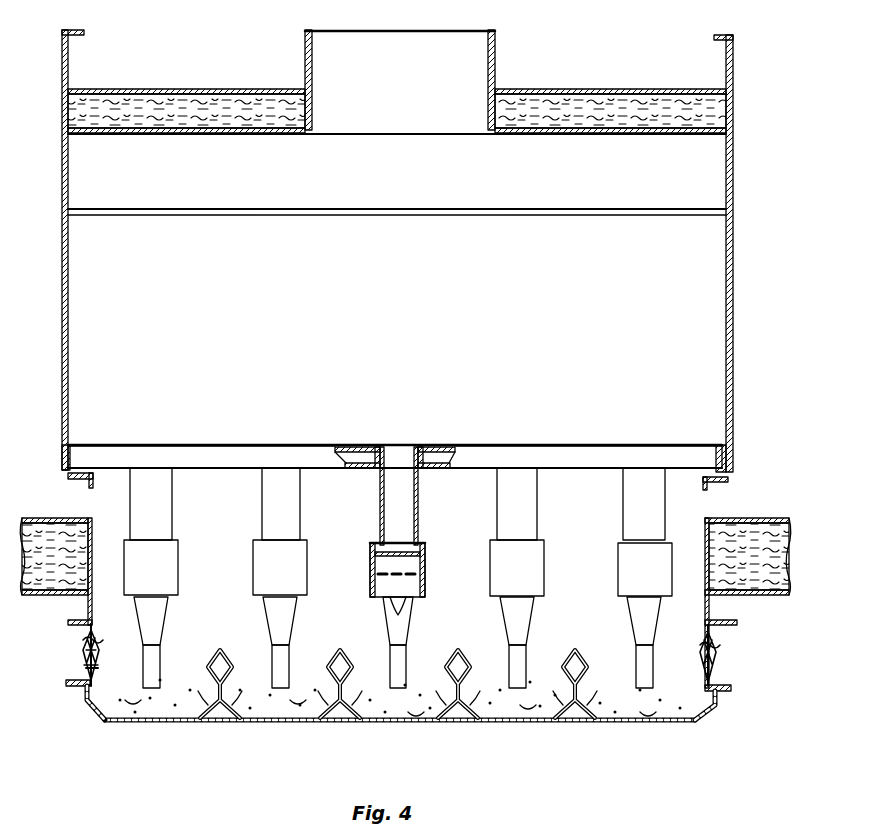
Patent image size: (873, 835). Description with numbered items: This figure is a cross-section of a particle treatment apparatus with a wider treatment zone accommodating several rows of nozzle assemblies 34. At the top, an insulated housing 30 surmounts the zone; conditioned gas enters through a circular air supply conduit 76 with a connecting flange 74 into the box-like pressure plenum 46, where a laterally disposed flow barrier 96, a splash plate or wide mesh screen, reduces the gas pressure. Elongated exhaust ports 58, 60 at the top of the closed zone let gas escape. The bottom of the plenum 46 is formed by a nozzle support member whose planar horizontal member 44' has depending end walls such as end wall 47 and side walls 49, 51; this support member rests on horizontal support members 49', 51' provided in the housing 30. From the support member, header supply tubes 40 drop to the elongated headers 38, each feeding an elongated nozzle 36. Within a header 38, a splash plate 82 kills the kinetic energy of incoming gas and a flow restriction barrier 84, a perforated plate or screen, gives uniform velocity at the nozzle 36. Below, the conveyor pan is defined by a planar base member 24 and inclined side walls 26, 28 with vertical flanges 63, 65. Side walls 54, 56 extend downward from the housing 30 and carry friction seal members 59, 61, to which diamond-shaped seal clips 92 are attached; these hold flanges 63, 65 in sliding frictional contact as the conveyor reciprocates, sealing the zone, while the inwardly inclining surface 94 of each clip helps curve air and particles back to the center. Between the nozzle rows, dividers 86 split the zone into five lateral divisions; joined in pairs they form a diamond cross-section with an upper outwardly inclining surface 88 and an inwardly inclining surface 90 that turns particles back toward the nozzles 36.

The planar base member 24 is at (132, 724).
The inclined side wall 26 is at (86, 698).
The inclined side wall 28 is at (707, 711).
The insulated housing 30 is at (196, 118).
The nozzle assembly 34 is at (355, 438).
The elongated nozzle 36 is at (160, 627).
The elongated header 38 is at (253, 564).
The header supply tube 40 is at (409, 510).
The planar horizontal member 44' is at (395, 429).
The pressure plenum 46 is at (418, 294).
The end wall 47 is at (207, 456).
The side wall 49 is at (40, 447).
The horizontal support member 49' is at (50, 481).
The side wall 51 is at (703, 446).
The horizontal support member 51' is at (742, 474).
The side wall 54 is at (86, 613).
The side wall 56 is at (717, 620).
The exhaust port 58 is at (84, 509).
The friction seal member 59 is at (96, 628).
The exhaust port 60 is at (690, 521).
The friction seal member 61 is at (704, 632).
The vertically disposed flange 63 is at (82, 660).
The vertically disposed flange 65 is at (698, 672).
The flange 74 is at (303, 32).
The air supply conduit 76 is at (496, 50).
The splash plate 82 is at (427, 545).
The flow restriction barrier 84 is at (421, 566).
The divider 86 is at (206, 684).
The outwardly inclining surface 88 is at (340, 651).
The inwardly inclining surface 90 is at (328, 672).
The seal clip 92 is at (83, 640).
The inwardly inclining surface 94 is at (100, 666).
The flow barrier 96 is at (431, 210).